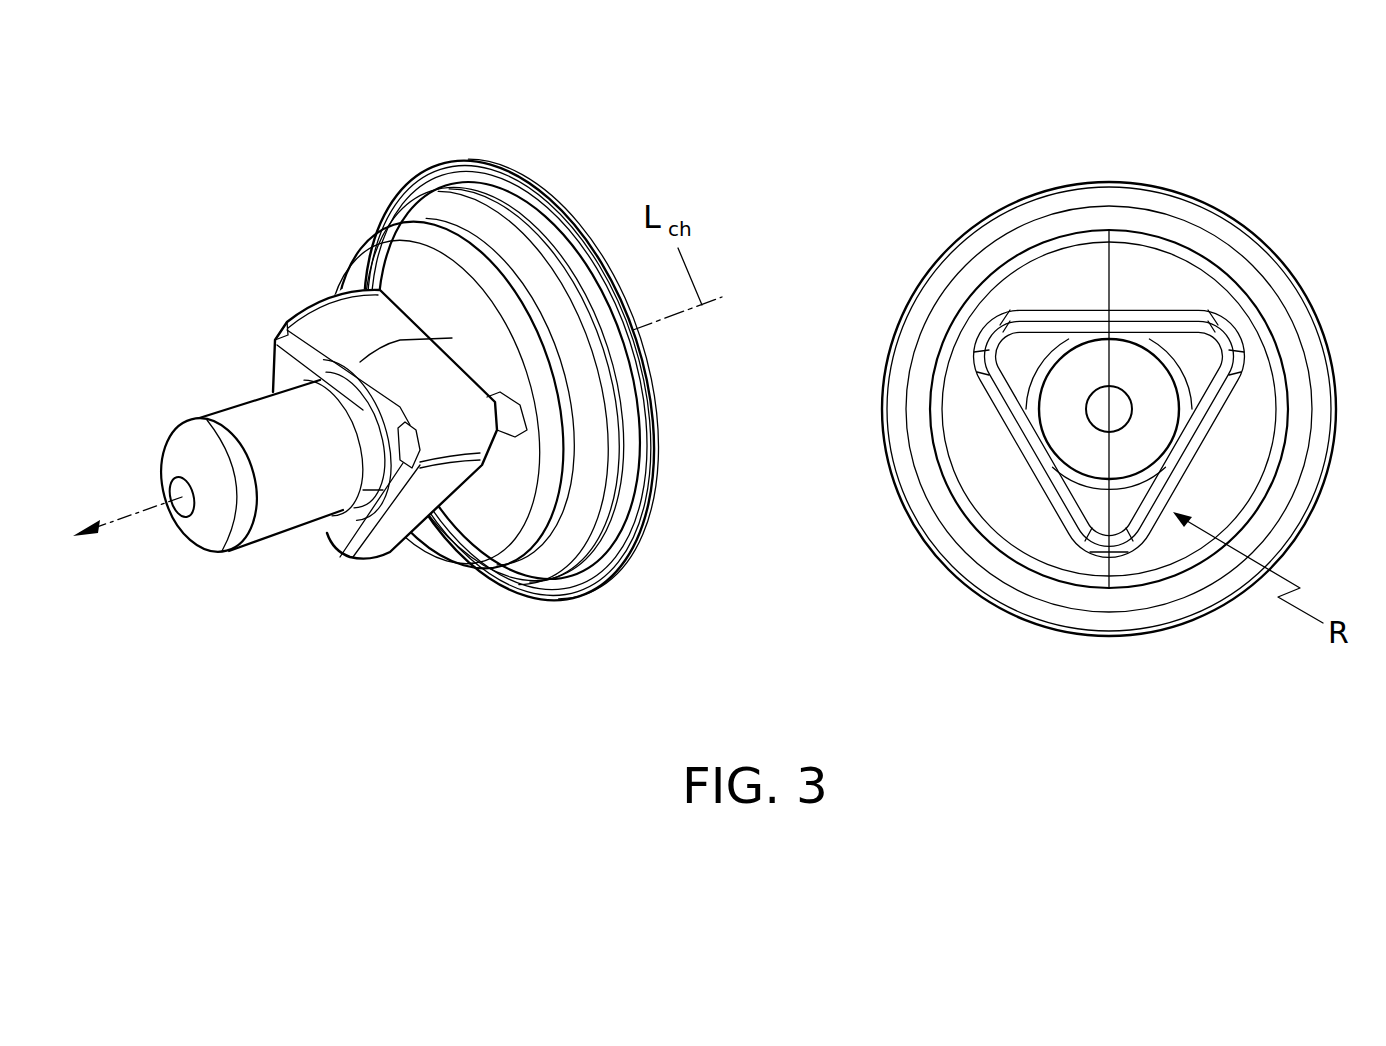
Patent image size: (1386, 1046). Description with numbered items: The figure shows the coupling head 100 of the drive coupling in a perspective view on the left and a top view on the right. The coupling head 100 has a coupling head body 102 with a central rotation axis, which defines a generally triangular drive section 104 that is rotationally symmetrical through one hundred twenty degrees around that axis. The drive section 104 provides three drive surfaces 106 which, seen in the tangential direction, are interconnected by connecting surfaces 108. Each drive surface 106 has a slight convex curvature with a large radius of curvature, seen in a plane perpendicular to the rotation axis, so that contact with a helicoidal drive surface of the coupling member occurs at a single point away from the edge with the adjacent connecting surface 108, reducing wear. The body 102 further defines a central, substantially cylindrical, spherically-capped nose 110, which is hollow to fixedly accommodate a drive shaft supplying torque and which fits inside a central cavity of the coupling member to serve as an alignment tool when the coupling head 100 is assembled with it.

The coupling head 100 is at (178, 296).
The coupling head body 102 is at (473, 312).
The drive section 104 is at (331, 588).
The drive surfaces 106 is at (365, 317).
The connecting surfaces 108 is at (300, 312).
The nose 110 is at (290, 495).